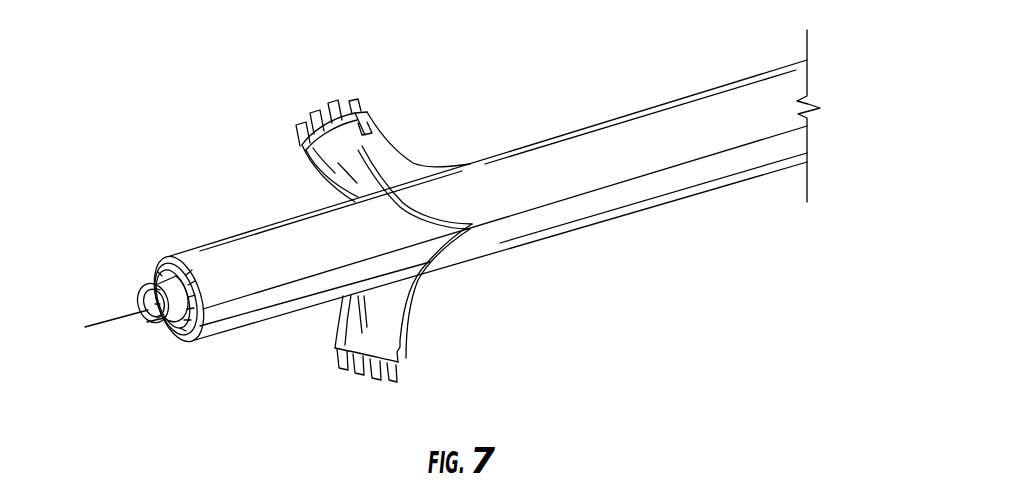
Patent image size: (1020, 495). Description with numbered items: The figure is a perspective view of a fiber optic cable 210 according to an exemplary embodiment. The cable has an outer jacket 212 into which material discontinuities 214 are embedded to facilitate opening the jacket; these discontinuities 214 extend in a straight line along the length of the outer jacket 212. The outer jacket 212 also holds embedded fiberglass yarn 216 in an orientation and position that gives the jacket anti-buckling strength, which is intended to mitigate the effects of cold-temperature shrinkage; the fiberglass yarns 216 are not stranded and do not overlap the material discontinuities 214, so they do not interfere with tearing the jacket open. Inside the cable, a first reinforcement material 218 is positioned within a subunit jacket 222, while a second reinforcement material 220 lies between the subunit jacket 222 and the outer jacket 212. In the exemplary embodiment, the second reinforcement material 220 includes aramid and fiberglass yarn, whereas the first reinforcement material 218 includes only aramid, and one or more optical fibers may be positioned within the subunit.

The fiber optic cable 210 is at (482, 191).
The outer jacket 212 is at (484, 246).
The material discontinuities 214 is at (382, 248).
The embedded fiberglass yarn 216 is at (396, 378).
The first reinforcement material 218 is at (150, 302).
The second reinforcement material 220 is at (227, 302).
The subunit jacket 222 is at (151, 312).